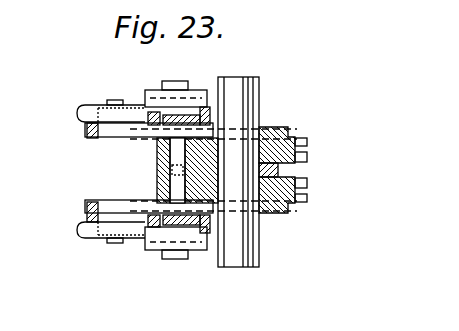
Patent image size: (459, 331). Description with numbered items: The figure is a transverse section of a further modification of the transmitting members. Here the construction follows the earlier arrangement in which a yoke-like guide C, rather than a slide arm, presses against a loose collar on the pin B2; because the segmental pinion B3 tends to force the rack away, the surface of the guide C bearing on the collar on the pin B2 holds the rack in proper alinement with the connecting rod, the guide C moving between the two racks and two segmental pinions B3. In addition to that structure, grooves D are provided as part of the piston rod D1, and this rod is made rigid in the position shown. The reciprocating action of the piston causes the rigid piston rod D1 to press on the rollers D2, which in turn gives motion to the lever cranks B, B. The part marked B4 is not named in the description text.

The lever crank B is at (104, 133).
The pin B2 is at (253, 247).
The segmental pinion B3 is at (308, 137).
The hub sleeve B4 is at (158, 182).
The guide C is at (278, 172).
The groove D is at (138, 103).
The piston rod D1 is at (150, 268).
The roller D2 is at (88, 258).